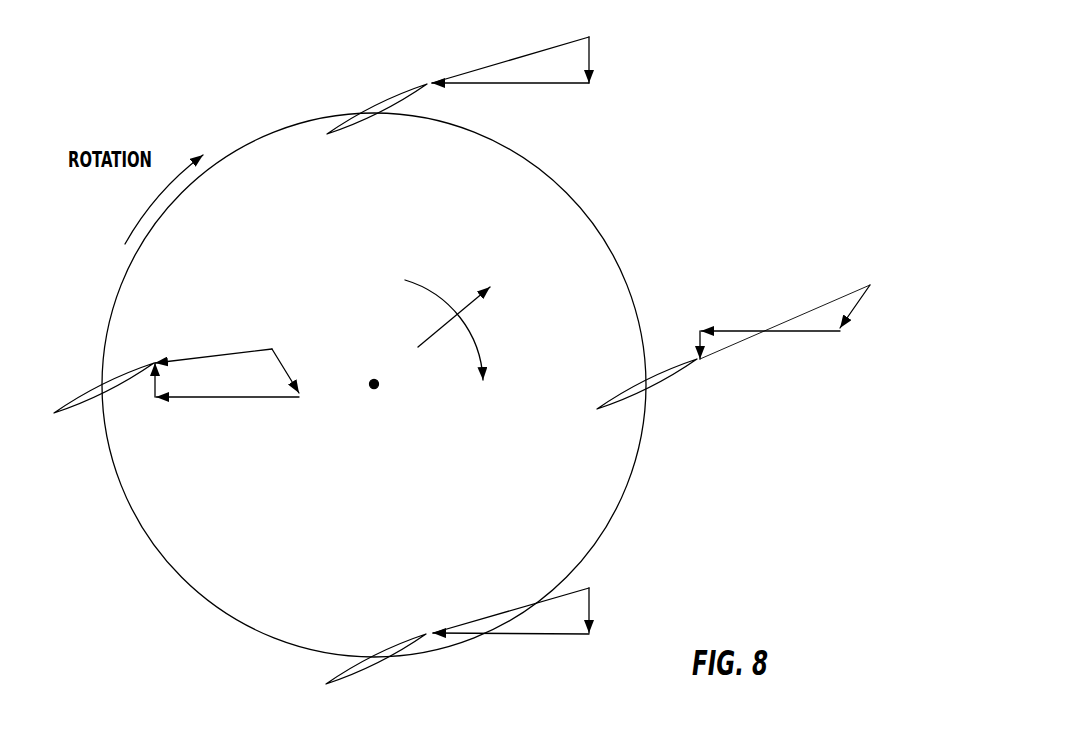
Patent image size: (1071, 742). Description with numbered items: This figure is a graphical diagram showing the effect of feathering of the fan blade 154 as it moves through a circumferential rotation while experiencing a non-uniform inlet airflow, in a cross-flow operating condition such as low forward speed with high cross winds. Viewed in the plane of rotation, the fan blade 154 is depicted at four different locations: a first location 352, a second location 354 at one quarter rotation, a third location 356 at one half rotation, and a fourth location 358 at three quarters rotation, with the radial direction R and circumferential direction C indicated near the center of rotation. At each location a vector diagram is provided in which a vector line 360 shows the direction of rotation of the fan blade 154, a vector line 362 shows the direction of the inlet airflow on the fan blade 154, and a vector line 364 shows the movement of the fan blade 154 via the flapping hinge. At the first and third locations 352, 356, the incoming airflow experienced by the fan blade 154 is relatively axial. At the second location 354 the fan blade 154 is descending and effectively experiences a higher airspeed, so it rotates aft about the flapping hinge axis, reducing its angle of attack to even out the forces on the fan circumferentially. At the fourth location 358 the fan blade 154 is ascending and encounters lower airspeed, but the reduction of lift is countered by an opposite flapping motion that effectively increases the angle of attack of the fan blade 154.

The fan blade 154 is at (370, 108).
The first location 352 is at (385, 68).
The second location 354 is at (620, 417).
The third location 356 is at (385, 628).
The fourth location 358 is at (82, 422).
The vector line 360 is at (500, 85).
The vector line 362 is at (590, 58).
The vector line 364 is at (150, 382).
The radial direction R is at (470, 302).
The circumferential direction C is at (480, 353).